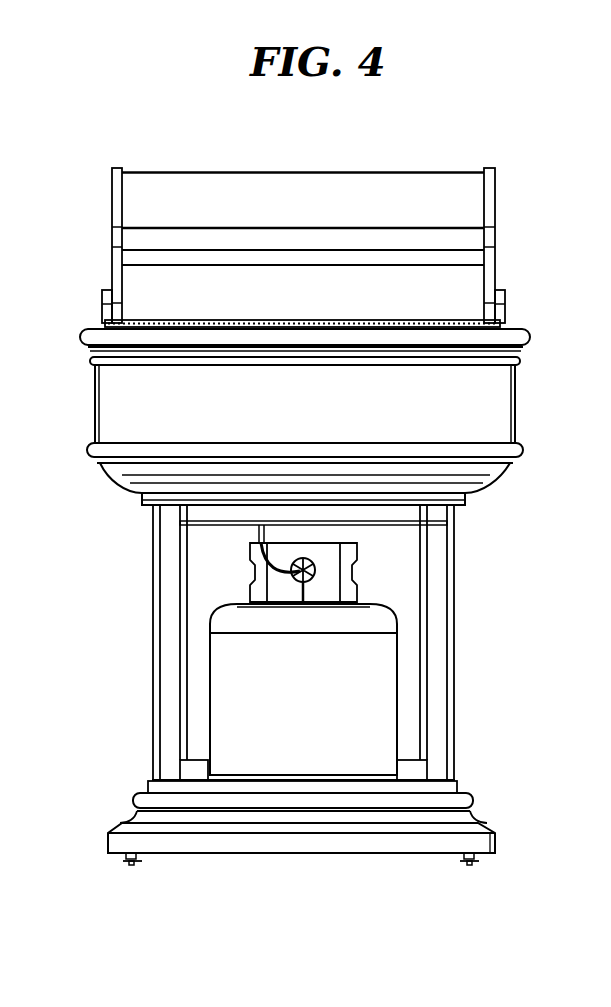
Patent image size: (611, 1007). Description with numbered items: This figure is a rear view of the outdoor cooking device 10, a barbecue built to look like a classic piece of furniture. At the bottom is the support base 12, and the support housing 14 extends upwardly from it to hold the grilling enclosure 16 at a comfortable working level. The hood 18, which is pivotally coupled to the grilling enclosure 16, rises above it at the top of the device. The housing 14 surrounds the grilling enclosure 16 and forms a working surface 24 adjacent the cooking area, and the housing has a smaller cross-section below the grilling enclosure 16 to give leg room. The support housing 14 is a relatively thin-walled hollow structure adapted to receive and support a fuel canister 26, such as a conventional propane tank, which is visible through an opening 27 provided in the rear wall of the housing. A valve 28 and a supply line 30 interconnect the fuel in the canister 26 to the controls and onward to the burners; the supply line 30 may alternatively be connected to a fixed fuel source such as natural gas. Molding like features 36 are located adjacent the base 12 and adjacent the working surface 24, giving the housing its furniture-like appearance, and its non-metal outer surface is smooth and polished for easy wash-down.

The outdoor cooking device 10 is at (527, 142).
The support base 12 is at (477, 860).
The support housing 14 is at (452, 628).
The grilling enclosure 16 is at (110, 320).
The hood 18 is at (222, 172).
The working surface 24 is at (513, 327).
The fuel canister 26 is at (316, 686).
The opening 27 is at (403, 678).
The valve 28 is at (318, 565).
The supply line 30 is at (257, 528).
The molding like features 36 is at (520, 350).